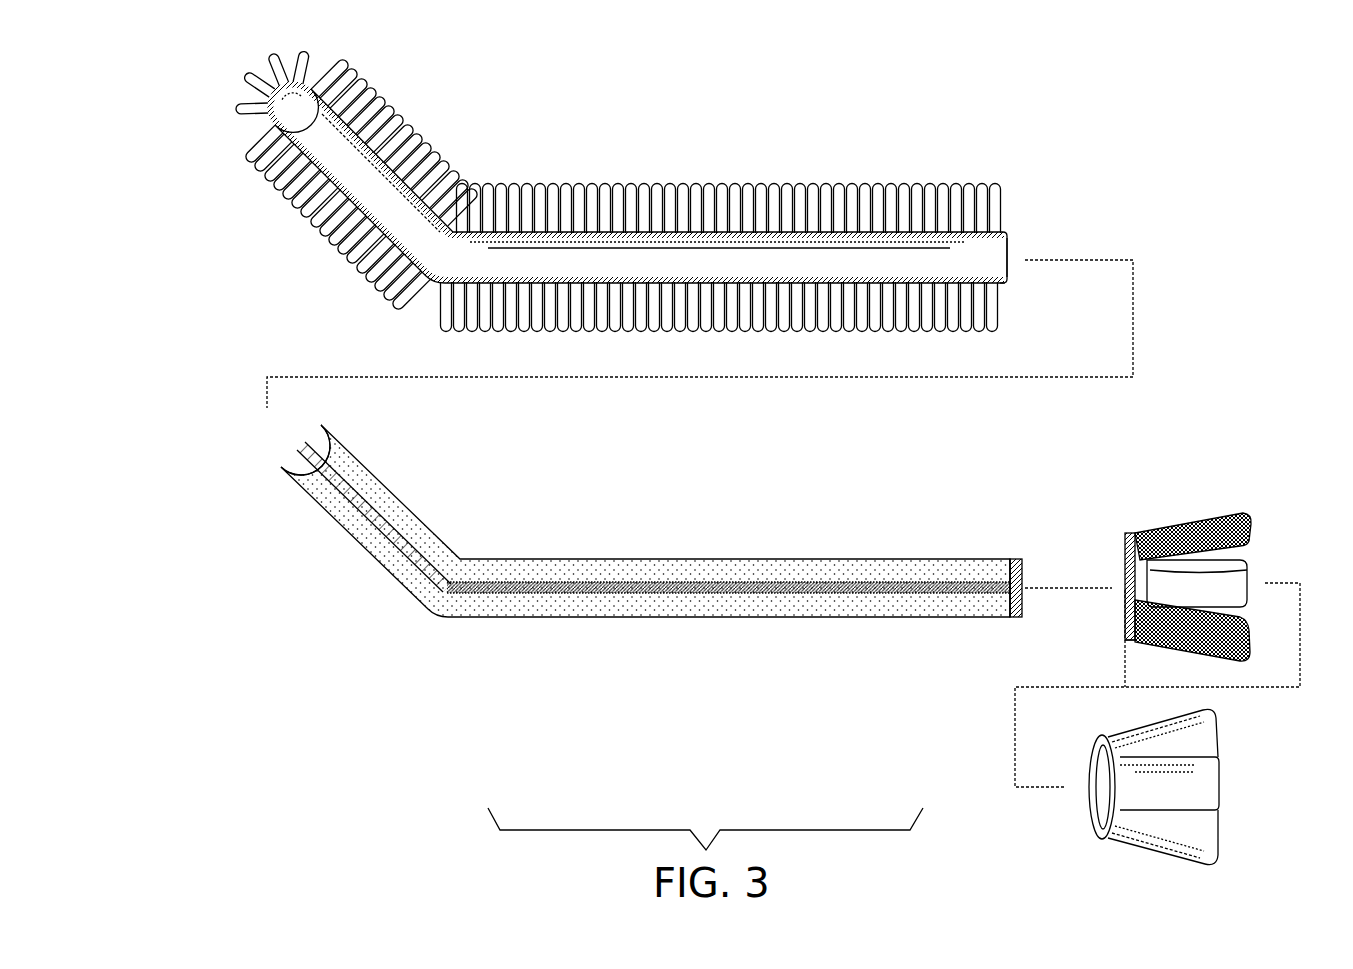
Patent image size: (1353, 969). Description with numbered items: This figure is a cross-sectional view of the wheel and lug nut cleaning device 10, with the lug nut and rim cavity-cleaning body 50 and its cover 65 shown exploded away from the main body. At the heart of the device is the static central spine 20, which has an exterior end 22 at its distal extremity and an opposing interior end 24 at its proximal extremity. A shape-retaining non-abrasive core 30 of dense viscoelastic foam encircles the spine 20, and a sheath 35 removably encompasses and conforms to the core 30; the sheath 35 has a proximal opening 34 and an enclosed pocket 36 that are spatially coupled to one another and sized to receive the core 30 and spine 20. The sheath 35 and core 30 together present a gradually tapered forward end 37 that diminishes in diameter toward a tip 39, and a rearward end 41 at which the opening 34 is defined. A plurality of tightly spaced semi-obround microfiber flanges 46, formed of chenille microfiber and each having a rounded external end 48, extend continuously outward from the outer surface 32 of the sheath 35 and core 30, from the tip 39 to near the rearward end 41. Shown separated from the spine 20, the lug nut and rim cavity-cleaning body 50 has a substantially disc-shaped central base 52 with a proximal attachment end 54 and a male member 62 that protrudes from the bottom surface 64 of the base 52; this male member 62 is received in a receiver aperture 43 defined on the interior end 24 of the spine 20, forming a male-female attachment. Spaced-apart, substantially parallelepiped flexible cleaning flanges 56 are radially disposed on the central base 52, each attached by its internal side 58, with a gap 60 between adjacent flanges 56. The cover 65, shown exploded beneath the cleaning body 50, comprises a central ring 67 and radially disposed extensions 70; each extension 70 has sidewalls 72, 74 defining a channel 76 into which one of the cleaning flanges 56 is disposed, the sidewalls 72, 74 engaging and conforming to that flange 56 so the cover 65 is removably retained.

The wheel and lug nut cleaning device 10 is at (1177, 137).
The static central spine 20 is at (560, 592).
The exterior end 22 is at (280, 446).
The interior end 24 is at (1000, 600).
The shape-retaining non-abrasive core 30 is at (467, 602).
The outer surface 32 is at (748, 226).
The proximal opening 34 is at (1008, 250).
The sheath 35 is at (368, 296).
The enclosed pocket 36 is at (813, 255).
The forward end 37 is at (297, 462).
The tip 39 is at (242, 80).
The rearward end 41 is at (1010, 283).
The receiver aperture 43 is at (1027, 587).
The microfiber flanges 46 is at (790, 335).
The rounded external end 48 is at (833, 333).
The lug nut and rim cavity-cleaning body 50 is at (1245, 507).
The central base 52 is at (1130, 533).
The proximal attachment end 54 is at (1122, 590).
The flexible cleaning flanges 56 is at (1275, 636).
The internal side 58 is at (1163, 557).
The gap 60 is at (1251, 540).
The male member 62 is at (1120, 583).
The bottom surface 64 is at (1124, 630).
The cover 65 is at (1132, 850).
The central ring 67 is at (1092, 803).
The extensions 70 is at (1205, 784).
The sidewall 72 is at (1213, 756).
The sidewall 74 is at (1208, 813).
The channel 76 is at (1103, 786).